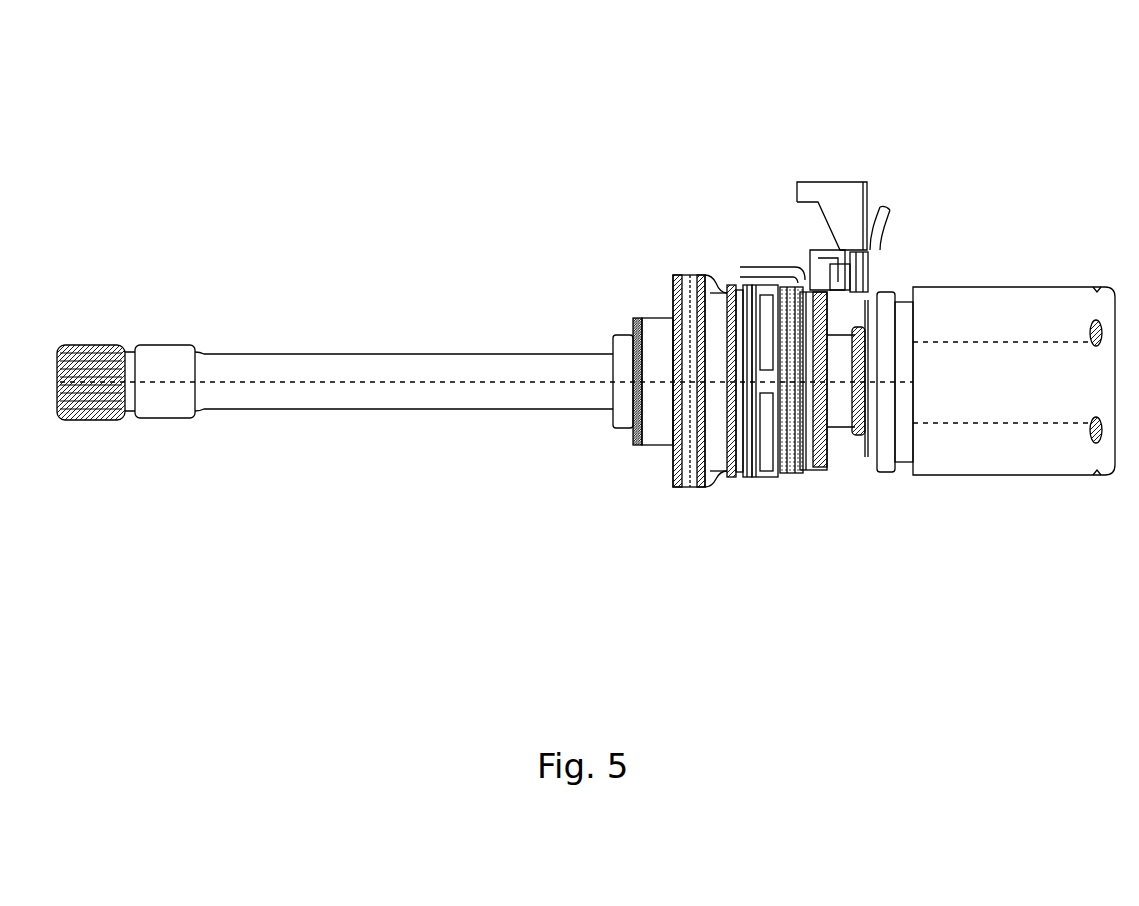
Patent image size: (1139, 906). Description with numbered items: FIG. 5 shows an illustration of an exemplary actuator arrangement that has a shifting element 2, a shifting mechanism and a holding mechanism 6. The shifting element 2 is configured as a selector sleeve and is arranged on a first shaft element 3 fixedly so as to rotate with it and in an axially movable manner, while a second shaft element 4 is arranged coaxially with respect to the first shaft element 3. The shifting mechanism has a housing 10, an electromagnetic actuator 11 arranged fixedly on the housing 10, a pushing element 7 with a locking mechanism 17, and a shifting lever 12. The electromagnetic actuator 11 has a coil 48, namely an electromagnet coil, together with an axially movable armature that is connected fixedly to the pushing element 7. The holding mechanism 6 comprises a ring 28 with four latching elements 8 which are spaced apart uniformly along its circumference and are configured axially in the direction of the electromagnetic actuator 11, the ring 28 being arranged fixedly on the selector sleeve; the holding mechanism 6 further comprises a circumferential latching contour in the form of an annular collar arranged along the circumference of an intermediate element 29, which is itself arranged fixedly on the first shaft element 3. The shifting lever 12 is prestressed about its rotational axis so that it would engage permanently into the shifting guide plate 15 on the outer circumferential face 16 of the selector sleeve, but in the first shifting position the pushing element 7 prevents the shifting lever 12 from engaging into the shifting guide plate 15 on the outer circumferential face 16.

The shifting element 2 is at (713, 352).
The first shaft element 3 is at (807, 312).
The second shaft element 4 is at (486, 372).
The holding mechanism 6 is at (767, 298).
The pushing element 7 is at (838, 267).
The latching elements 8 is at (743, 489).
The housing 10 is at (847, 197).
The electromagnetic actuator 11 is at (970, 213).
The shifting lever 12 is at (767, 268).
The shifting guide plate 15 is at (710, 280).
The outer circumferential face 16 is at (662, 298).
The locking mechanism 17 is at (813, 243).
The ring 28 is at (737, 278).
The intermediate element 29 is at (843, 370).
The coil 48 is at (868, 267).